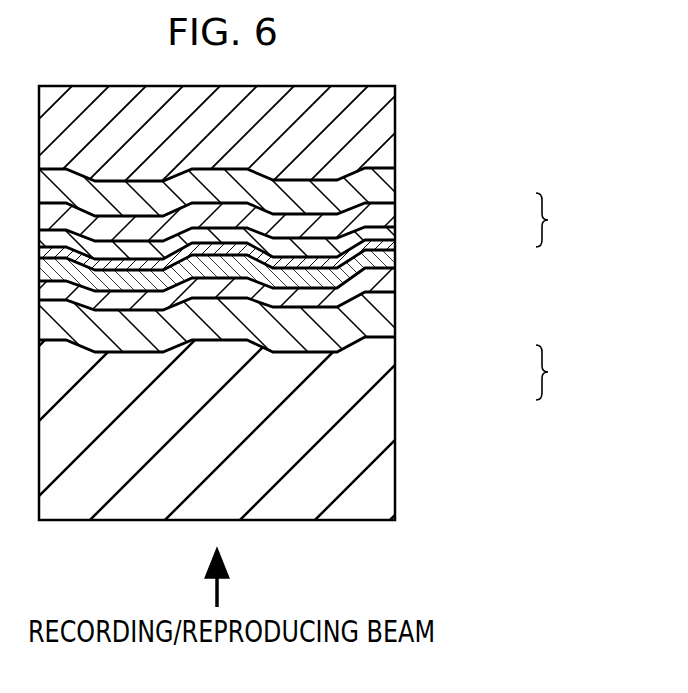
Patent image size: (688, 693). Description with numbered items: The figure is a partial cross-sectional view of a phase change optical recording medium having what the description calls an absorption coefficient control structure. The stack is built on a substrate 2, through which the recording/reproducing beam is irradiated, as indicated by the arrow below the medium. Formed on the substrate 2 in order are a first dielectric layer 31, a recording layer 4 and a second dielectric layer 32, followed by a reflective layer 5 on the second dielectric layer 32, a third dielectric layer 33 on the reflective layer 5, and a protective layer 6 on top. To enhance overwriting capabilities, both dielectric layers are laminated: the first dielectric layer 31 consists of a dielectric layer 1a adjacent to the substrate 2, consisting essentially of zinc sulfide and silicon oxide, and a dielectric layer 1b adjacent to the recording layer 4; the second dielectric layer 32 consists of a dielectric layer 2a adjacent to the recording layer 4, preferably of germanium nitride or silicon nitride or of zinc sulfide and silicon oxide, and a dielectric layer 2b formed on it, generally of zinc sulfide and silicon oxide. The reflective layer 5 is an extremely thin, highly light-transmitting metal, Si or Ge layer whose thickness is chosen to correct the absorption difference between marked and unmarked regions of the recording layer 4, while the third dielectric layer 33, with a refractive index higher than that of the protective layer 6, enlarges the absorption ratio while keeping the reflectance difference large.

The protective layer 6 is at (395, 130).
The third dielectric layer 33 is at (395, 188).
The reflective layer 5 is at (395, 212).
The dielectric layer 2b is at (395, 235).
The dielectric layer 2a is at (395, 248).
The second dielectric layer 32 is at (564, 220).
The recording layer 4 is at (395, 265).
The dielectric layer 1b is at (395, 285).
The dielectric layer 1a is at (395, 322).
The first dielectric layer 31 is at (564, 372).
The substrate 2 is at (395, 420).